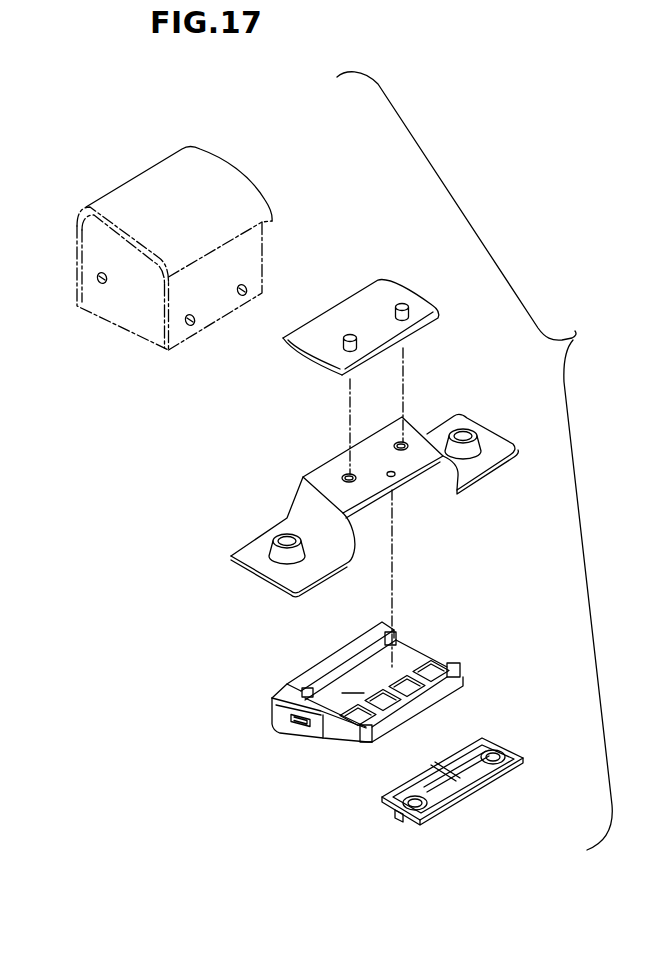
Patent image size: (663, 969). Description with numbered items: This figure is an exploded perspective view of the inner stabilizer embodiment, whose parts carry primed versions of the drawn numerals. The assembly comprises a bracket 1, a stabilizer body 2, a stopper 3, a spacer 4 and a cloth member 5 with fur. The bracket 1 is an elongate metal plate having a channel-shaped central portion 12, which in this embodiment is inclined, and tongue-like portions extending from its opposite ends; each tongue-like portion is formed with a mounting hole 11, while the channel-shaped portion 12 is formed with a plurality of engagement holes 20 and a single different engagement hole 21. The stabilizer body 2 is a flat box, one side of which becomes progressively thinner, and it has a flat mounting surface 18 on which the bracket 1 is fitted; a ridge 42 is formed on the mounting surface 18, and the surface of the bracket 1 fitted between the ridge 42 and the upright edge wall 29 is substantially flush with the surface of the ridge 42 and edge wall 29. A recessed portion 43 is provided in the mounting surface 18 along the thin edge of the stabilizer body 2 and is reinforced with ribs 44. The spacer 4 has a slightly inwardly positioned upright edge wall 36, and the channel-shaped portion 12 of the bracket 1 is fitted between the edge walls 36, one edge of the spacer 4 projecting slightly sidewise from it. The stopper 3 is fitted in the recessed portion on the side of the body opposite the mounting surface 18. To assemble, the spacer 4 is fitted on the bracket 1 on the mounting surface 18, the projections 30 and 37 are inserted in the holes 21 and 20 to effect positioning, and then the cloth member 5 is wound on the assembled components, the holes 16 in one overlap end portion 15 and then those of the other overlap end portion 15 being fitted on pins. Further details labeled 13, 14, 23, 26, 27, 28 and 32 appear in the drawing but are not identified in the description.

The bracket 1 is at (368, 524).
The stabilizer body 2 is at (368, 690).
The stopper 3 is at (461, 787).
The spacer 4 is at (381, 356).
The cloth member with fur 5 is at (169, 254).
The mounting hole 11 is at (283, 537).
The channel-shaped central portion 12 is at (316, 473).
The hole 13 is at (499, 751).
The top wall of cover 14 is at (145, 183).
The overlap end portion 15 is at (75, 279).
The hole 16 is at (103, 284).
The mounting surface 18 is at (352, 680).
The engagement hole 20 is at (399, 443).
The engagement hole 21 is at (392, 479).
The hole 23 is at (415, 810).
The lug 26 is at (281, 713).
The projection 27 is at (394, 805).
The slot 28 is at (298, 733).
The upright edge wall 29 is at (280, 690).
The projection 30 is at (397, 704).
The rib 32 is at (440, 790).
The upright edge wall 36 is at (420, 336).
The projection 37 is at (349, 334).
The ridge 42 is at (335, 653).
The recessed portion 43 is at (432, 670).
The rib 44 is at (423, 690).